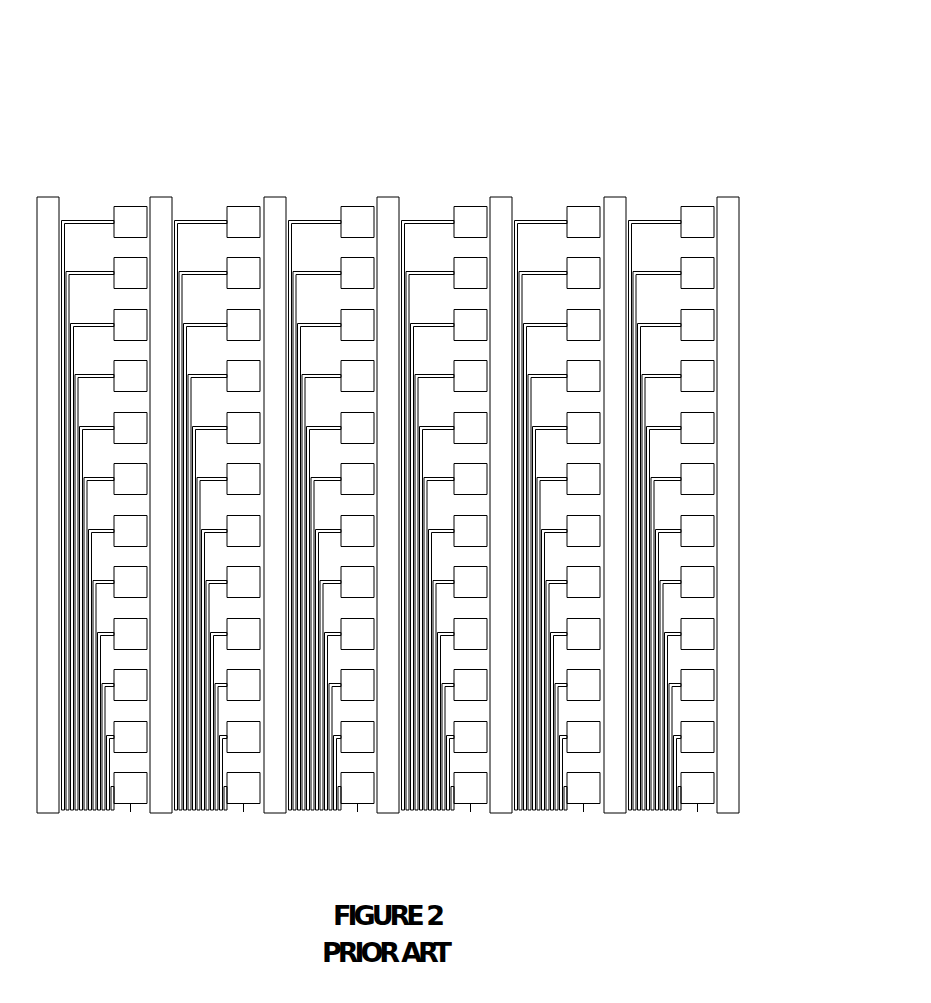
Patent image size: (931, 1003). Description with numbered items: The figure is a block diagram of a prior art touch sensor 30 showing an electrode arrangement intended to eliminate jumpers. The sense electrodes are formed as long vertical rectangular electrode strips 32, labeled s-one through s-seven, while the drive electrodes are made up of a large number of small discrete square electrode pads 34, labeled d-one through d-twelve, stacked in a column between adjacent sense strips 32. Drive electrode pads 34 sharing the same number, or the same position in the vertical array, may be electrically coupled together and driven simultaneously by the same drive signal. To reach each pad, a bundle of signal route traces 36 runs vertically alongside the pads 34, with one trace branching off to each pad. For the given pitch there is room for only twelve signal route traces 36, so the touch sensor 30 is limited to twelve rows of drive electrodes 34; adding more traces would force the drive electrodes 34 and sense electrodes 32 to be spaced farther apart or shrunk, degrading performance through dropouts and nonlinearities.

The touch sensor 30 is at (590, 122).
The sense electrode strips 32 is at (270, 205).
The drive electrode pads 34 is at (577, 207).
The signal route traces 36 is at (312, 227).